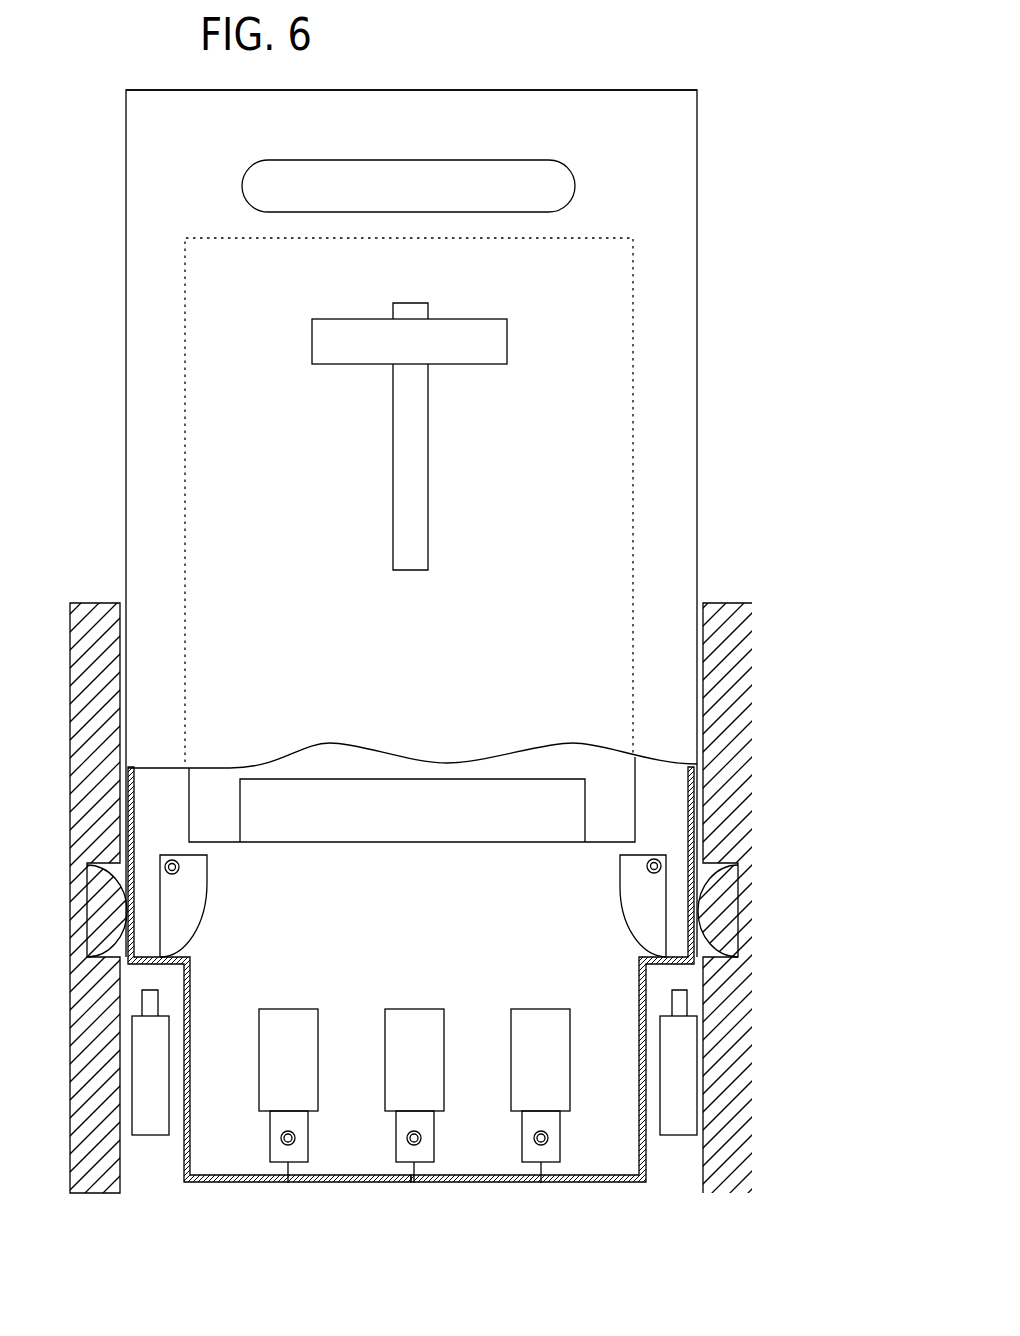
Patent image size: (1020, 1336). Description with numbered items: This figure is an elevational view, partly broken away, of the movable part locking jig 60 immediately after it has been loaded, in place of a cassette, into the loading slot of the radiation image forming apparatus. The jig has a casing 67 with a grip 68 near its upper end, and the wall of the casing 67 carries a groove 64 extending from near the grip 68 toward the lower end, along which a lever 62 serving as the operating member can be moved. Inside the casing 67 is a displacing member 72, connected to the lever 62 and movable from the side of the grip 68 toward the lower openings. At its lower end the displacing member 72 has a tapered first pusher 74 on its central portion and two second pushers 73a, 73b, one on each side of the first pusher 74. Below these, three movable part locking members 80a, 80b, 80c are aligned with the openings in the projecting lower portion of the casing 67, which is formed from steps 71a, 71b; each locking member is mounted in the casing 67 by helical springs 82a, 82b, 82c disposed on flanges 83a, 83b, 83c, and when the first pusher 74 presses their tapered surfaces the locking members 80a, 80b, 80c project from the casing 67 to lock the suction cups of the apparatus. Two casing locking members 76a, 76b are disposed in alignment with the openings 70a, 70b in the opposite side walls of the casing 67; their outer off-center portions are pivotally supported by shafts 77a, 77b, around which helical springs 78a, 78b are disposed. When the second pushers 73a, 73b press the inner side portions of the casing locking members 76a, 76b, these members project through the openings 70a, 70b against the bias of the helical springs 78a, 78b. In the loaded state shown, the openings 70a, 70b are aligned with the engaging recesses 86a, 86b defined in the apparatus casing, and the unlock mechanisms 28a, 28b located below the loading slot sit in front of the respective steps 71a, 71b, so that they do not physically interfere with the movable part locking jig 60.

The movable part locking jig 60 is at (556, 86).
The casing 67 is at (655, 188).
The grip 68 is at (293, 192).
The displacing member 72 is at (602, 315).
The lever 62 is at (327, 355).
The groove 64 is at (408, 460).
The first pusher 74 is at (390, 823).
The second pusher 73a is at (612, 818).
The second pusher 73b is at (212, 818).
The casing locking member 76a is at (648, 930).
The casing locking member 76b is at (178, 930).
The shaft 77a is at (655, 859).
The shaft 77b is at (171, 860).
The helical spring 78a is at (645, 866).
The helical spring 78b is at (180, 866).
The opening 70a is at (700, 887).
The opening 70b is at (132, 922).
The engaging recess 86a is at (732, 892).
The engaging recess 86b is at (103, 895).
The step 71a is at (675, 967).
The step 71b is at (152, 968).
The movable part locking member 80a is at (537, 1022).
The movable part locking member 80b is at (411, 1022).
The movable part locking member 80c is at (285, 1022).
The helical spring 82a is at (533, 1138).
The helical spring 82b is at (406, 1138).
The helical spring 82c is at (280, 1138).
The flange 83a is at (541, 1183).
The flange 83b is at (414, 1183).
The flange 83c is at (288, 1183).
The unlock mechanism 28a is at (677, 1123).
The unlock mechanism 28b is at (147, 1123).